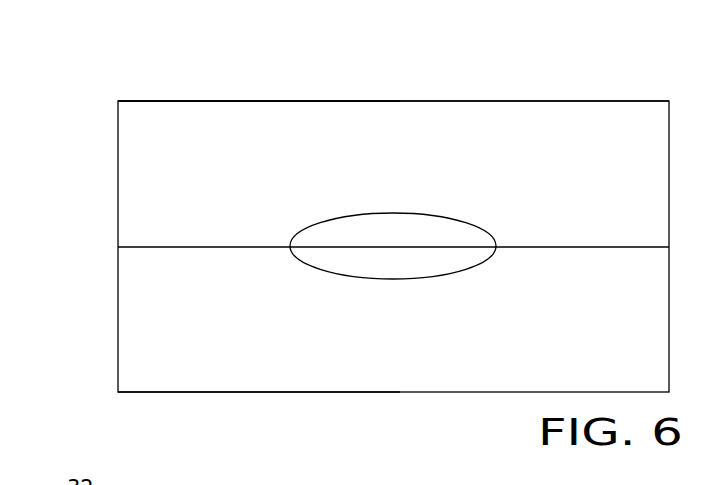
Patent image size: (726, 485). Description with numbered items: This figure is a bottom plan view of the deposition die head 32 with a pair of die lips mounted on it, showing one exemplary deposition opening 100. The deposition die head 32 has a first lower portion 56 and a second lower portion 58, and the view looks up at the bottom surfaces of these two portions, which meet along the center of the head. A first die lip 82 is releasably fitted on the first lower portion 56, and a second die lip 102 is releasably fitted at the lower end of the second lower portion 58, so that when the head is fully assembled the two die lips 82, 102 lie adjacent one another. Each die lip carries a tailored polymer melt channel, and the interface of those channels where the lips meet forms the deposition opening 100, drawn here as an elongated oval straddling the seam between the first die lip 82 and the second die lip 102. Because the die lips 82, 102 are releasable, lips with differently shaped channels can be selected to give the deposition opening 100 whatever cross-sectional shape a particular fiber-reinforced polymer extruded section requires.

The deposition die head 32 is at (160, 70).
The first lower portion 56 is at (116, 196).
The second lower portion 58 is at (116, 342).
The first die lip 82 is at (327, 108).
The deposition opening 100 is at (444, 218).
The second die lip 102 is at (248, 376).